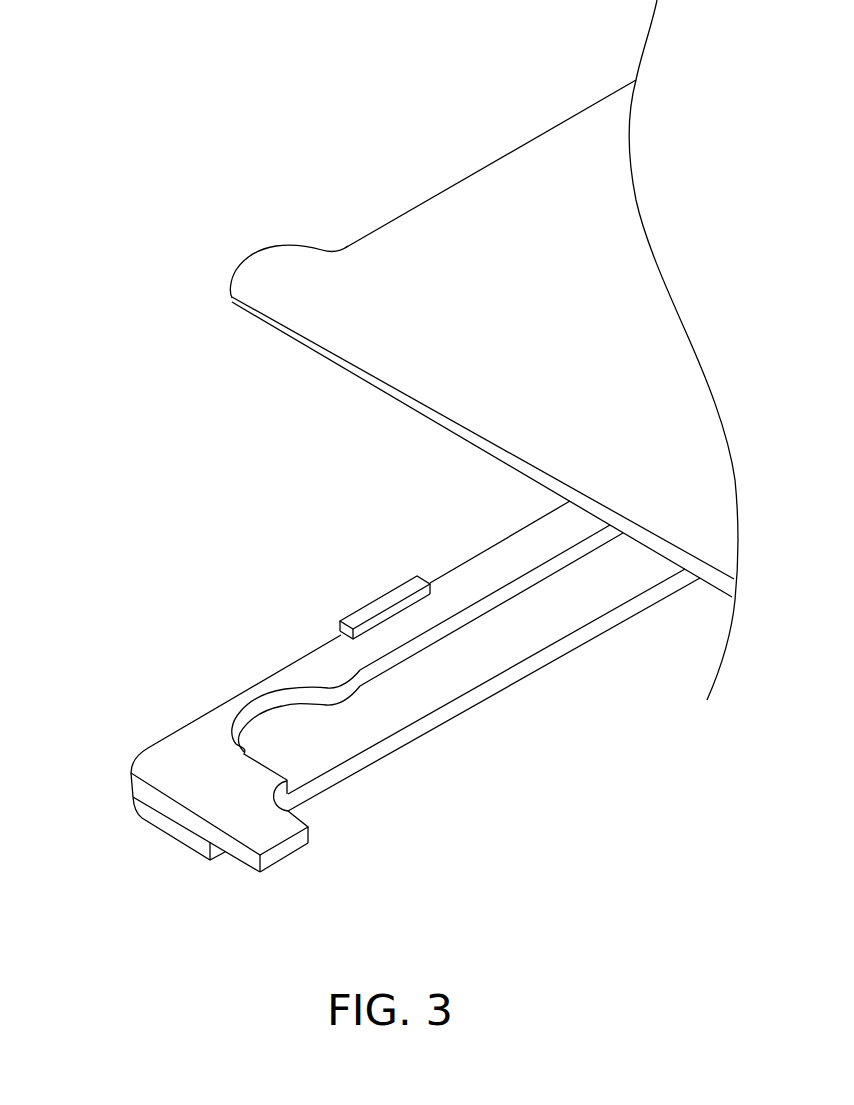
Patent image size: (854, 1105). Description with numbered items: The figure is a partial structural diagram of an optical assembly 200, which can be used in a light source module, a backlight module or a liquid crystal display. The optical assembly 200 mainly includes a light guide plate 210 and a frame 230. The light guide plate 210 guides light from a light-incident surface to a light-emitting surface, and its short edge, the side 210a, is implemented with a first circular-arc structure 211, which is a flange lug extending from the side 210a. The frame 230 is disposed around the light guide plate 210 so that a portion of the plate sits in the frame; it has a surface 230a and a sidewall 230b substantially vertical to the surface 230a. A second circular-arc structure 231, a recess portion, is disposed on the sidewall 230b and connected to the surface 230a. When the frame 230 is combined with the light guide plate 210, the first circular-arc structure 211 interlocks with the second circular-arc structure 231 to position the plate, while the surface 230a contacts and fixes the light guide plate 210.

The optical assembly 200 is at (116, 60).
The light guide plate 210 is at (430, 263).
The side of the light guide plate 210a is at (383, 223).
The first circular-arc structure 211 is at (273, 271).
The frame 230 is at (346, 556).
The surface 230a is at (413, 695).
The sidewall 230b is at (332, 670).
The second circular-arc structure 231 is at (313, 733).